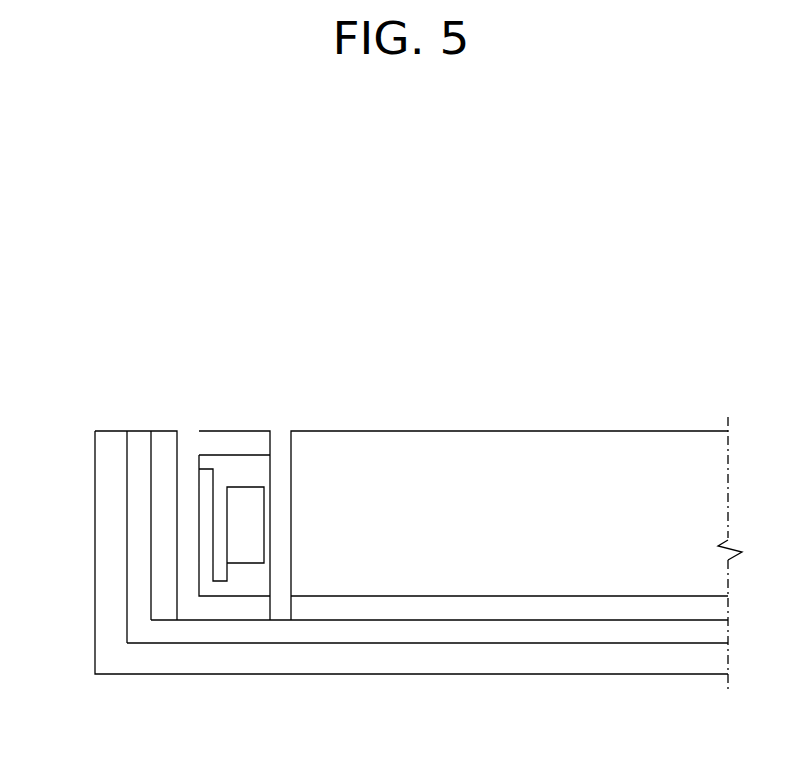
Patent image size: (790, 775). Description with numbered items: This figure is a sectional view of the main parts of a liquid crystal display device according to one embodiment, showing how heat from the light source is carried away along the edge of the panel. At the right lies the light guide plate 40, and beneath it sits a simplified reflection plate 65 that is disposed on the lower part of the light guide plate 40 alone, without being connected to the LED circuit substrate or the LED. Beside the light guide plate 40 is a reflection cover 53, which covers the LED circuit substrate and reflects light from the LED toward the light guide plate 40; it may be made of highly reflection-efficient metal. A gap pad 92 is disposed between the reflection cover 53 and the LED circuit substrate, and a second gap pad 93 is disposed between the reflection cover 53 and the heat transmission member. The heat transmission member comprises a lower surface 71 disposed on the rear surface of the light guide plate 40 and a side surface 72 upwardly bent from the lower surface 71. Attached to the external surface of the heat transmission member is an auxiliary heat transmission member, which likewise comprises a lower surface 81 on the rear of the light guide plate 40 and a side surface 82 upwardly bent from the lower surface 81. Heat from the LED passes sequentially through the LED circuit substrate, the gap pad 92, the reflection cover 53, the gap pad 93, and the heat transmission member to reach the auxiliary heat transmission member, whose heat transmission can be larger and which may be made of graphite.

The light guide plate 40 is at (430, 447).
The reflection cover 53 is at (250, 438).
The reflection plate 65 is at (470, 613).
The lower surface 71 is at (355, 633).
The side surface 72 is at (130, 491).
The lower surface 81 is at (416, 667).
The side surface 82 is at (108, 548).
The gap pad 92 is at (203, 457).
The gap pad 93 is at (162, 435).